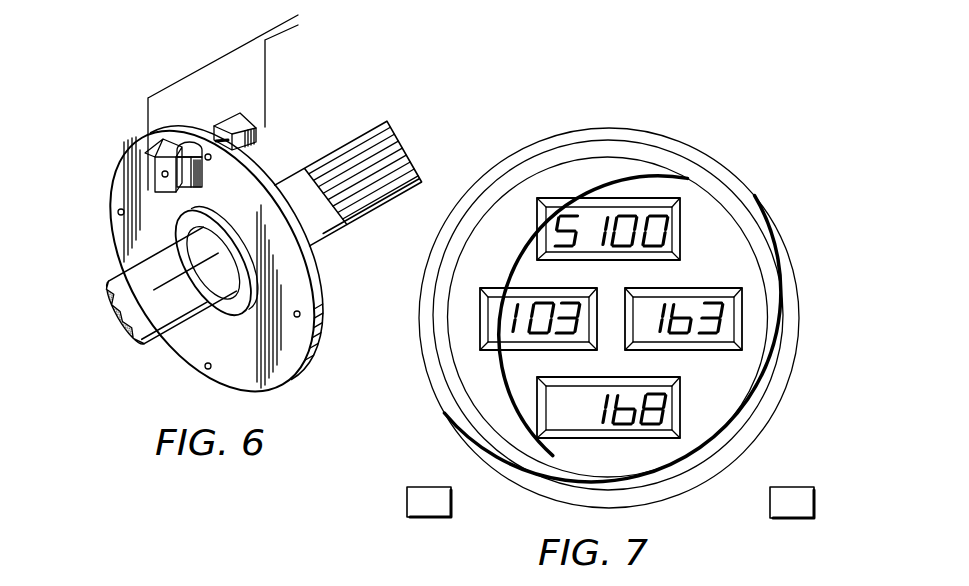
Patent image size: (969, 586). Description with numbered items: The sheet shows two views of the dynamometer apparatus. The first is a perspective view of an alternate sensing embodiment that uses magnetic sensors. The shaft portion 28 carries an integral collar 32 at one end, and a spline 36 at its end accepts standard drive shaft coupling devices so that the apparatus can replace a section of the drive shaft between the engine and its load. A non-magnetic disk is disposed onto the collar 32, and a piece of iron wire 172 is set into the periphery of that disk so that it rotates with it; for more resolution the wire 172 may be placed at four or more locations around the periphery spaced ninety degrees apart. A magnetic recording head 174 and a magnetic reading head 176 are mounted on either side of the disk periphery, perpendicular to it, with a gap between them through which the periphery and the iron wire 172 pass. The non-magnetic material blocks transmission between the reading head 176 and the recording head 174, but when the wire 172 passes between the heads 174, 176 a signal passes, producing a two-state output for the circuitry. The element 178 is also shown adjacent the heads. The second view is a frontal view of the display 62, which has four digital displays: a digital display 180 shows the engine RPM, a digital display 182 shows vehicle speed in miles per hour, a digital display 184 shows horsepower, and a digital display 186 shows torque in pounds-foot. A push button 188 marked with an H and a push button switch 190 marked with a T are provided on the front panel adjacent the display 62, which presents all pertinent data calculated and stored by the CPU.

In FIG. 6, the shaft portion 28 is at (118, 337).
In FIG. 6, the integral collar 32 is at (205, 218).
In FIG. 6, the spline 36 is at (353, 133).
In FIG. 6, the iron wire 172 is at (119, 212).
In FIG. 6, the magnetic recording head 174 is at (264, 140).
In FIG. 6, the magnetic reading head 176 is at (183, 148).
In FIG. 6, the sensor block 178 is at (143, 132).
In FIG. 7, the display 62 is at (681, 139).
In FIG. 7, the digital display 180 is at (553, 212).
In FIG. 7, the digital display 182 is at (495, 308).
In FIG. 7, the digital display 184 is at (732, 326).
In FIG. 7, the digital display 186 is at (675, 410).
In FIG. 7, the push button 188 is at (428, 487).
In FIG. 7, the push button switch 190 is at (770, 504).